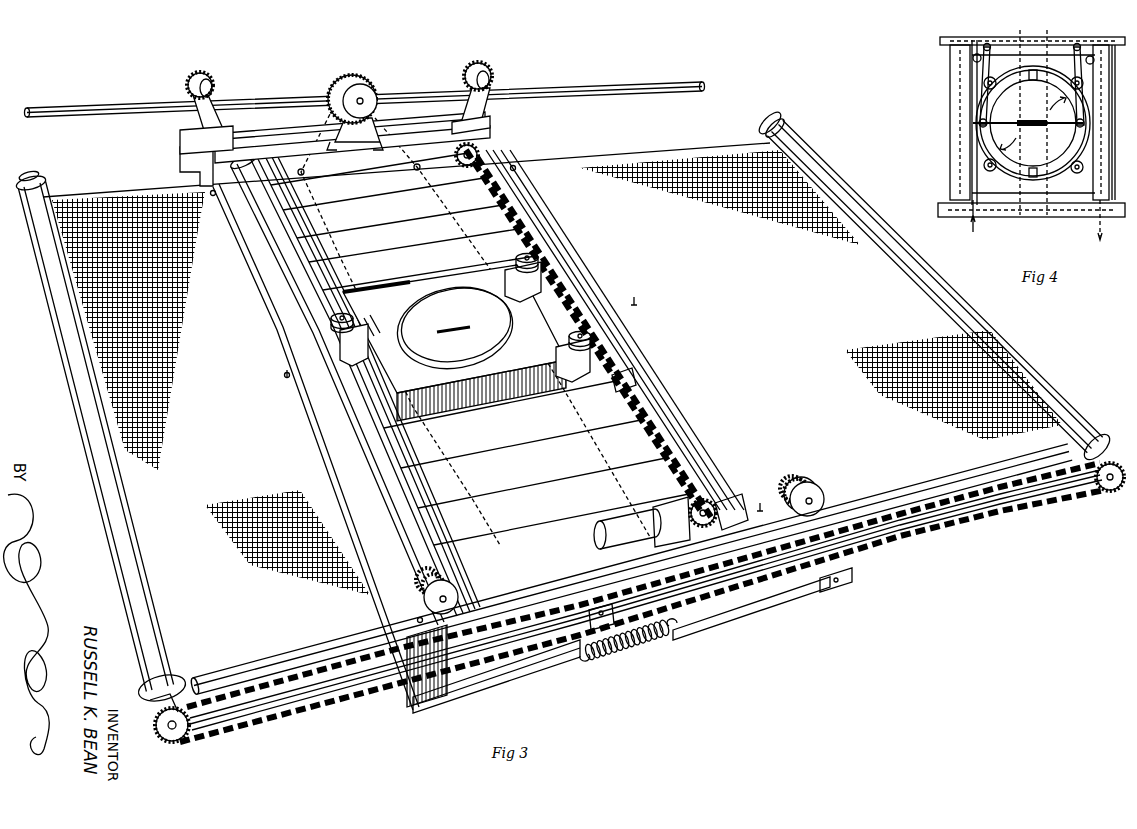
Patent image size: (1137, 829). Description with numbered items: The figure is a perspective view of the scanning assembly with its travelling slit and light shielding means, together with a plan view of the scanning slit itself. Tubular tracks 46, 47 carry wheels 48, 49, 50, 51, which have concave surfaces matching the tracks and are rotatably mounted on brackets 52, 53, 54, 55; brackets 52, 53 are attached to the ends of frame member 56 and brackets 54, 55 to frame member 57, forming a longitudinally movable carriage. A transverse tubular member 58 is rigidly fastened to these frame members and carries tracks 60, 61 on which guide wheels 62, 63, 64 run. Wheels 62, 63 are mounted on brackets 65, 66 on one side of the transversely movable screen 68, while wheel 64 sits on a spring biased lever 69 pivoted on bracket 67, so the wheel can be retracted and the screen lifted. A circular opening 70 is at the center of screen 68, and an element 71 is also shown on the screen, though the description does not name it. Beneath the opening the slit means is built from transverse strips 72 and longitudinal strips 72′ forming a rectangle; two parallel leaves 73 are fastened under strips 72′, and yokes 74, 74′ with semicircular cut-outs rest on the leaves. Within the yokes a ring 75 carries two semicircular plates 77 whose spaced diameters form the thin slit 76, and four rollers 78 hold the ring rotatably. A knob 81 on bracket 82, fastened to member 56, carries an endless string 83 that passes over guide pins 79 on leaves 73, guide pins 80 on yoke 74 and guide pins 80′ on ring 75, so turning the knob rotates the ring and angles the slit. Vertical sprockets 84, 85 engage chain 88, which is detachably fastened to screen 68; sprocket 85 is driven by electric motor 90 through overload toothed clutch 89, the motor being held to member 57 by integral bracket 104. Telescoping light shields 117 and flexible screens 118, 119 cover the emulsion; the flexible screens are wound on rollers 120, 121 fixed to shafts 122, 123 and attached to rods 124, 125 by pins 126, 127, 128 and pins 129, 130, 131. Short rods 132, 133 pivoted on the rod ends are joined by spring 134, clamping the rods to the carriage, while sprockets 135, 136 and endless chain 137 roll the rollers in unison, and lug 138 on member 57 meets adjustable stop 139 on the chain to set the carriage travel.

In FIG. 3, the tubular track 46 is at (670, 88).
In FIG. 3, the tubular track 47 is at (1003, 460).
In FIG. 3, the wheel 48 is at (483, 66).
In FIG. 3, the wheel 49 is at (212, 80).
In FIG. 3, the wheel 50 is at (424, 592).
In FIG. 3, the wheel 51 is at (816, 490).
In FIG. 3, the bracket 52 is at (485, 107).
In FIG. 3, the bracket 53 is at (206, 112).
In FIG. 3, the bracket 54 is at (418, 570).
In FIG. 3, the bracket 55 is at (793, 477).
In FIG. 3, the frame member 56 is at (431, 122).
In FIG. 3, the frame member 57 is at (808, 590).
In FIG. 3, the transverse tubular member 58 is at (318, 337).
In FIG. 3, the track 60 is at (392, 437).
In FIG. 3, the track 61 is at (643, 413).
In FIG. 3, the guide wheel 62 is at (533, 250).
In FIG. 3, the guide wheel 63 is at (587, 327).
In FIG. 3, the guide wheel 64 is at (327, 317).
In FIG. 3, the bracket 65 is at (543, 277).
In FIG. 3, the bracket 66 is at (620, 357).
In FIG. 3, the bracket 67 is at (360, 357).
In FIG. 3, the screen 68 is at (473, 400).
In FIG. 3, the spring biased lever 69 is at (366, 324).
In FIG. 3, the circular opening 70 is at (475, 295).
In FIG. 3, the tool plate 71 is at (478, 352).
In FIG. 4, the transverse metal strip 72 is at (1100, 45).
In FIG. 4, the longitudinal metal strip 72′ is at (1040, 217).
In FIG. 4, the rectangular metal leaf 73 is at (1113, 100).
In FIG. 4, the yoke 74 is at (1028, 64).
In FIG. 4, the yoke 74′ is at (990, 195).
In FIG. 4, the ring 75 is at (1072, 133).
In FIG. 3, the scanning slit 76 is at (458, 332).
In FIG. 4, the scanning slit 76 is at (1005, 121).
In FIG. 4, the semicircular metal plate 77 is at (1000, 145).
In FIG. 4, the roller 78 is at (1077, 173).
In FIG. 4, the guide pin 79 is at (1076, 44).
In FIG. 4, the guide pin 80 is at (1087, 61).
In FIG. 4, the guide pin 80′ is at (1077, 122).
In FIG. 3, the knob 81 is at (342, 78).
In FIG. 3, the bracket 82 is at (365, 128).
In FIG. 3, the string 83 is at (450, 220).
In FIG. 4, the string 83 is at (1095, 237).
In FIG. 3, the sprocket 84 is at (497, 142).
In FIG. 3, the sprocket 85 is at (730, 487).
In FIG. 3, the chain 88 is at (640, 367).
In FIG. 3, the overload toothed clutch 89 is at (723, 467).
In FIG. 3, the electric motor 90 is at (622, 528).
In FIG. 3, the bracket 104 is at (660, 505).
In FIG. 3, the telescoping light shield 117 is at (490, 230).
In FIG. 3, the flexible screen 118 is at (717, 160).
In FIG. 3, the flexible screen 119 is at (123, 193).
In FIG. 3, the roller 120 is at (813, 167).
In FIG. 3, the roller 121 is at (80, 373).
In FIG. 3, the shaft 122 is at (1092, 445).
In FIG. 3, the shaft 123 is at (153, 707).
In FIG. 3, the rod 124 is at (410, 703).
In FIG. 3, the rod 125 is at (775, 557).
In FIG. 3, the pin 126 is at (210, 195).
In FIG. 3, the pin 127 is at (284, 375).
In FIG. 3, the pin 128 is at (417, 619).
In FIG. 3, the pin 129 is at (516, 169).
In FIG. 3, the pin 130 is at (636, 305).
In FIG. 3, the pin 131 is at (760, 503).
In FIG. 3, the short rod 132 is at (547, 660).
In FIG. 3, the short rod 133 is at (737, 603).
In FIG. 3, the spring 134 is at (627, 645).
In FIG. 3, the sprocket 135 is at (167, 737).
In FIG. 3, the sprocket 136 is at (1100, 482).
In FIG. 3, the endless chain 137 is at (293, 717).
In FIG. 3, the lug 138 is at (598, 632).
In FIG. 3, the adjustable stop 139 is at (655, 636).